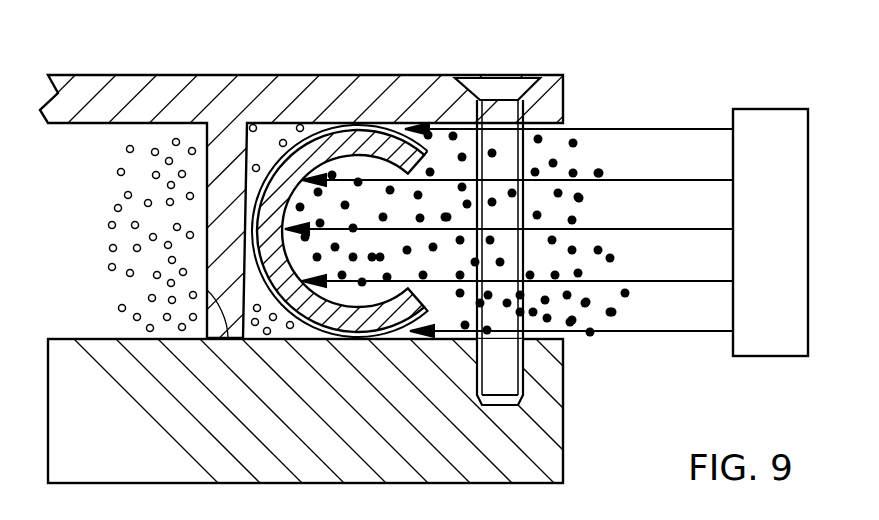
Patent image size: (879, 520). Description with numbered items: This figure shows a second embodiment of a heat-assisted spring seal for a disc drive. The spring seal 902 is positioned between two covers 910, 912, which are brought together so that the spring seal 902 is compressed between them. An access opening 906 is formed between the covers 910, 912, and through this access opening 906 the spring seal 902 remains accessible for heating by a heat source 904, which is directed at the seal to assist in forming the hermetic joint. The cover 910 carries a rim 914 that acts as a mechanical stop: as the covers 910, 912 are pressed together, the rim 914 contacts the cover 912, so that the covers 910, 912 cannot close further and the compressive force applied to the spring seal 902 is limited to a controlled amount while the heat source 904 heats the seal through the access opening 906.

The spring seal 902 is at (318, 142).
The heat source 904 is at (749, 230).
The access opening 906 is at (595, 218).
The cover 910 is at (178, 75).
The cover 912 is at (567, 395).
The rim 914 is at (207, 290).